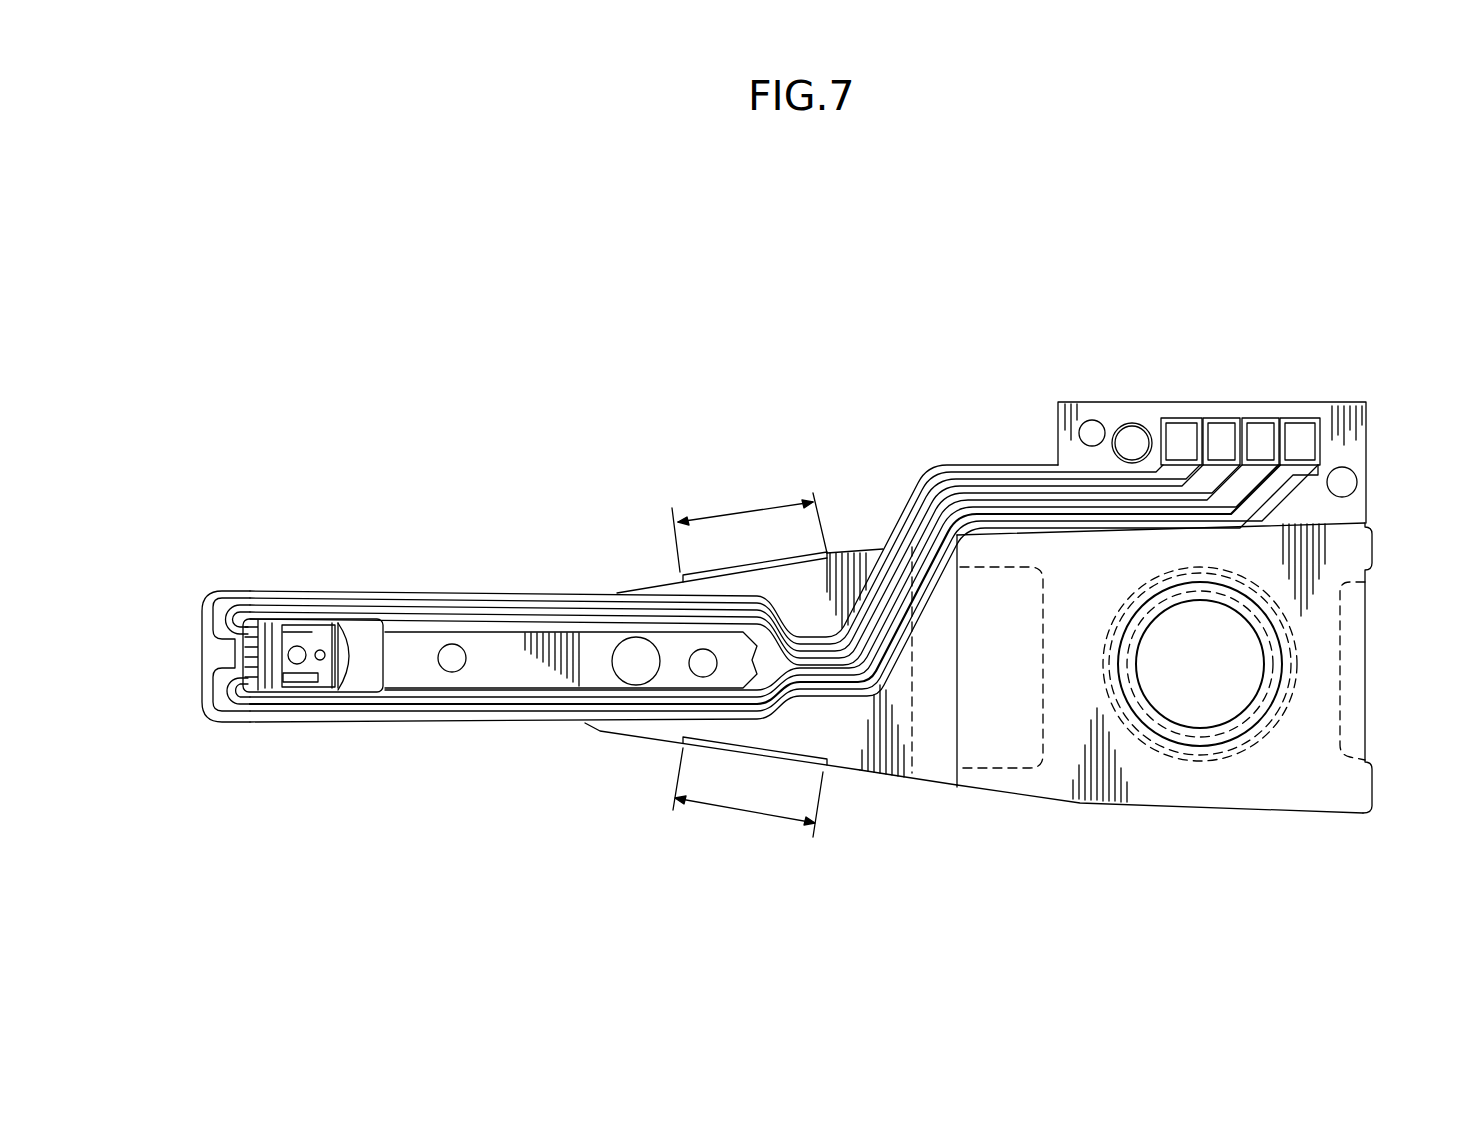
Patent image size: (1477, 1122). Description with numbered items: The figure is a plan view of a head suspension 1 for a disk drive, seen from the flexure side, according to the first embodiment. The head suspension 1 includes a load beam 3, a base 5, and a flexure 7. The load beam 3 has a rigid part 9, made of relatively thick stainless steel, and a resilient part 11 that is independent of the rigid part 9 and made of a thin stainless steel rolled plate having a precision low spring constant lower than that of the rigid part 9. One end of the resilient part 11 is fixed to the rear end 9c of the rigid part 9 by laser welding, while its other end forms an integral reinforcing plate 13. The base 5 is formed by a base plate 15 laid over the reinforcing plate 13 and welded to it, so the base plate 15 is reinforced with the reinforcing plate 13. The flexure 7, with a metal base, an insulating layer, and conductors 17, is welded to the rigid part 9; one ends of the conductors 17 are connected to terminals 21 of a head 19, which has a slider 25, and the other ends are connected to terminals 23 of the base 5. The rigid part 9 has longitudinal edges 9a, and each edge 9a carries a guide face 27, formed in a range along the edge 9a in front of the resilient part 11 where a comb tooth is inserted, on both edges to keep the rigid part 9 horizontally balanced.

The head suspension 1 is at (857, 468).
The load beam 3 is at (617, 590).
The base 5 is at (1350, 554).
The flexure 7 is at (520, 591).
The rigid part 9 is at (603, 730).
The longitudinal edges 9a is at (661, 580).
The rear end 9c is at (927, 788).
The resilient part 11 is at (1000, 790).
The reinforcing plate 13 is at (1367, 695).
The base plate 15 is at (1366, 632).
The conductors 17 is at (542, 713).
The head 19 is at (218, 721).
The terminals 21 is at (221, 659).
The terminals 23 is at (1229, 418).
The slider 25 is at (311, 645).
The guide face 27 is at (742, 576).